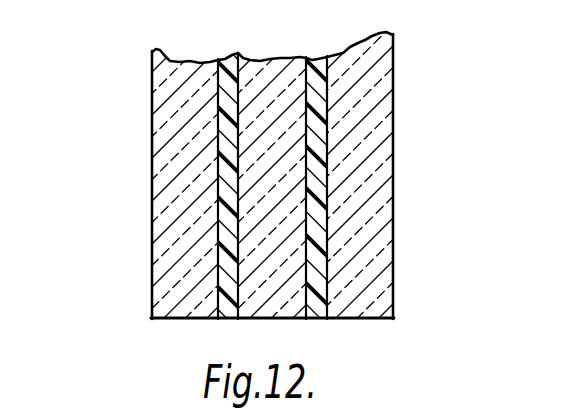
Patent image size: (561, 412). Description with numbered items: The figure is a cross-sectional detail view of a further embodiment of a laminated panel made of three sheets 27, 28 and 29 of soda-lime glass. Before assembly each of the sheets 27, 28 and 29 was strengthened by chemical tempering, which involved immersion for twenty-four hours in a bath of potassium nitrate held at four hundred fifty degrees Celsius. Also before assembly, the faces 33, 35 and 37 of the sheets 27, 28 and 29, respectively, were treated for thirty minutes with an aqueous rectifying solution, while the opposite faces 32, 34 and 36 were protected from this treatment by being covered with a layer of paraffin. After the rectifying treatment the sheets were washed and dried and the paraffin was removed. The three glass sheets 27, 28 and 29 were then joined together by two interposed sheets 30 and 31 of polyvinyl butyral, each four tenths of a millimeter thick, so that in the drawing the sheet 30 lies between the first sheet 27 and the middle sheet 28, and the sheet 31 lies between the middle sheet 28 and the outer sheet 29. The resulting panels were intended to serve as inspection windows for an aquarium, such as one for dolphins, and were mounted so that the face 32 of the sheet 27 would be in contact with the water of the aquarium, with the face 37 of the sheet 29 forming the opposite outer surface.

The sheet 27 is at (192, 283).
The sheet 28 is at (279, 262).
The sheet 29 is at (368, 272).
The sheet of polyvinyl butyral 30 is at (236, 294).
The sheet of polyvinyl butyral 31 is at (314, 297).
The face 32 is at (152, 98).
The face 33 is at (214, 84).
The face 34 is at (244, 72).
The face 35 is at (305, 58).
The face 36 is at (348, 55).
The face 37 is at (395, 72).